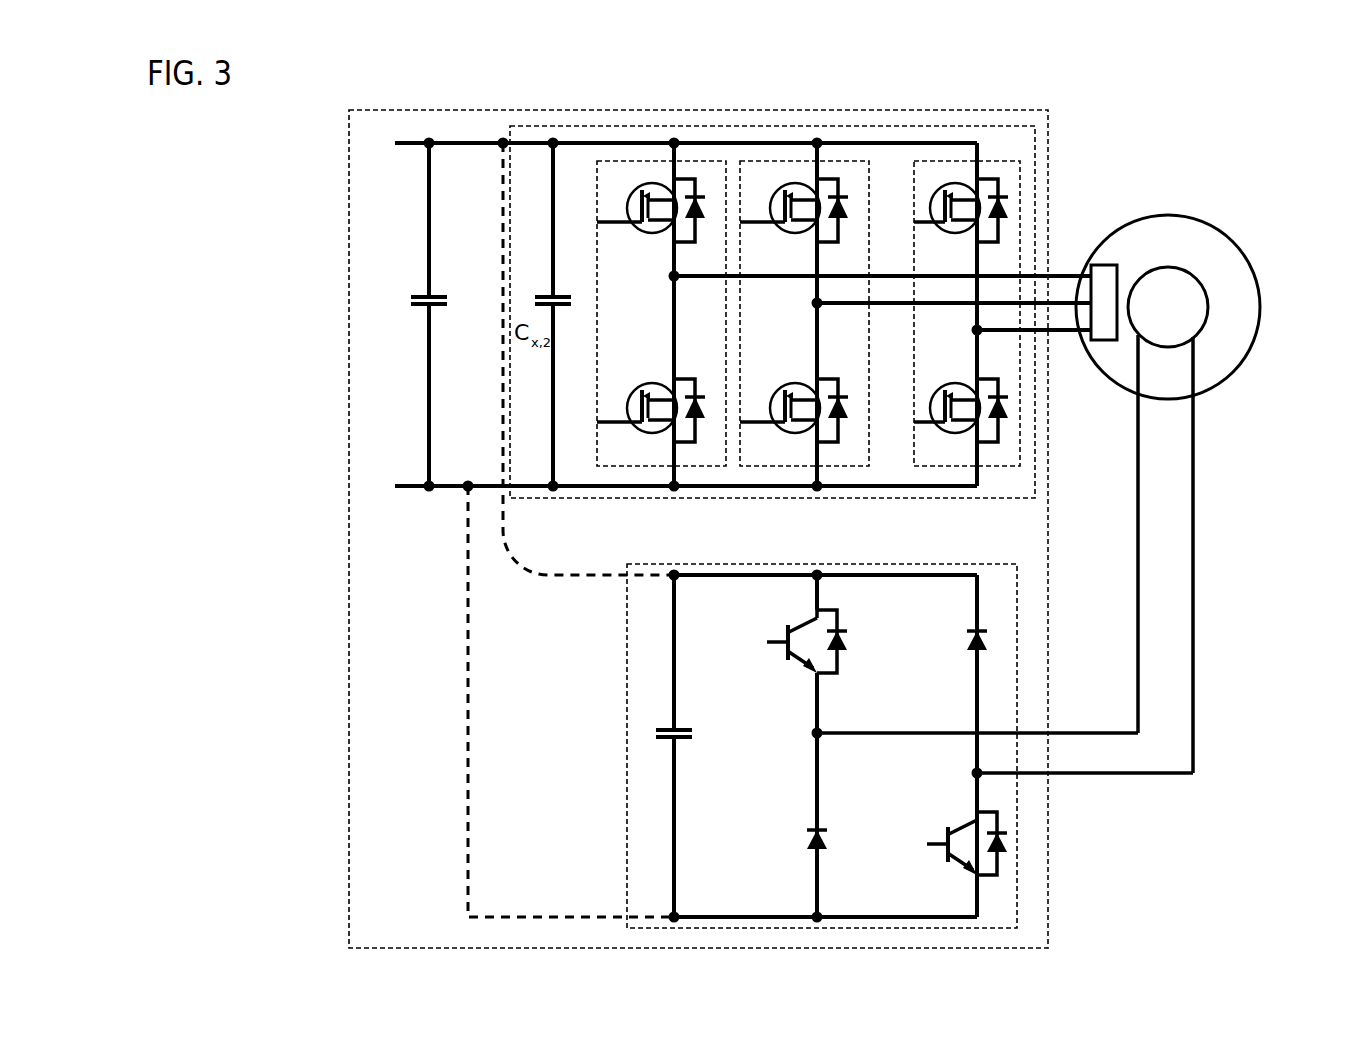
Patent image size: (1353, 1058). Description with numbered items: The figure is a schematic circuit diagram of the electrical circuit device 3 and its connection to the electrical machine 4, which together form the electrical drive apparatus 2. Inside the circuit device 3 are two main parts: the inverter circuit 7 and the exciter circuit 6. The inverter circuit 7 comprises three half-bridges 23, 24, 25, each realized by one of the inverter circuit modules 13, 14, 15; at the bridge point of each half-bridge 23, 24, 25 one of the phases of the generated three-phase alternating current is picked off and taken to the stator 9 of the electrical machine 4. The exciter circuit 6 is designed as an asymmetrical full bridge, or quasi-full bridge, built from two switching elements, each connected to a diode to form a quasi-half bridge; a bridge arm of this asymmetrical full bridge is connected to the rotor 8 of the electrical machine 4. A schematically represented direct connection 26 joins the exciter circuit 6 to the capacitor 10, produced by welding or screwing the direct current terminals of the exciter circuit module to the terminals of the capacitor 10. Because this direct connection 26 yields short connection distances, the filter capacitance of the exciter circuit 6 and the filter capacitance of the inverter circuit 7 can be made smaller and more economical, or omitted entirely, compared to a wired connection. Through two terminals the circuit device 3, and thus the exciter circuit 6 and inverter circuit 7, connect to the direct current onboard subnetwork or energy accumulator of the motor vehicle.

The electrical drive apparatus 2 is at (1076, 125).
The electrical circuit device 3 is at (973, 108).
The electrical machine 4 is at (1237, 284).
The exciter circuit 6 is at (1018, 862).
The inverter circuit 7 is at (1035, 440).
The rotor 8 is at (1175, 293).
The stator 9 is at (1103, 283).
The capacitor 10 is at (441, 293).
The inverter circuit module 13 is at (644, 466).
The inverter circuit module 14 is at (848, 466).
The inverter circuit module 15 is at (959, 466).
The half-bridge 23 is at (651, 467).
The half-bridge 24 is at (821, 467).
The half-bridge 25 is at (963, 467).
The direct connection 26 is at (466, 670).